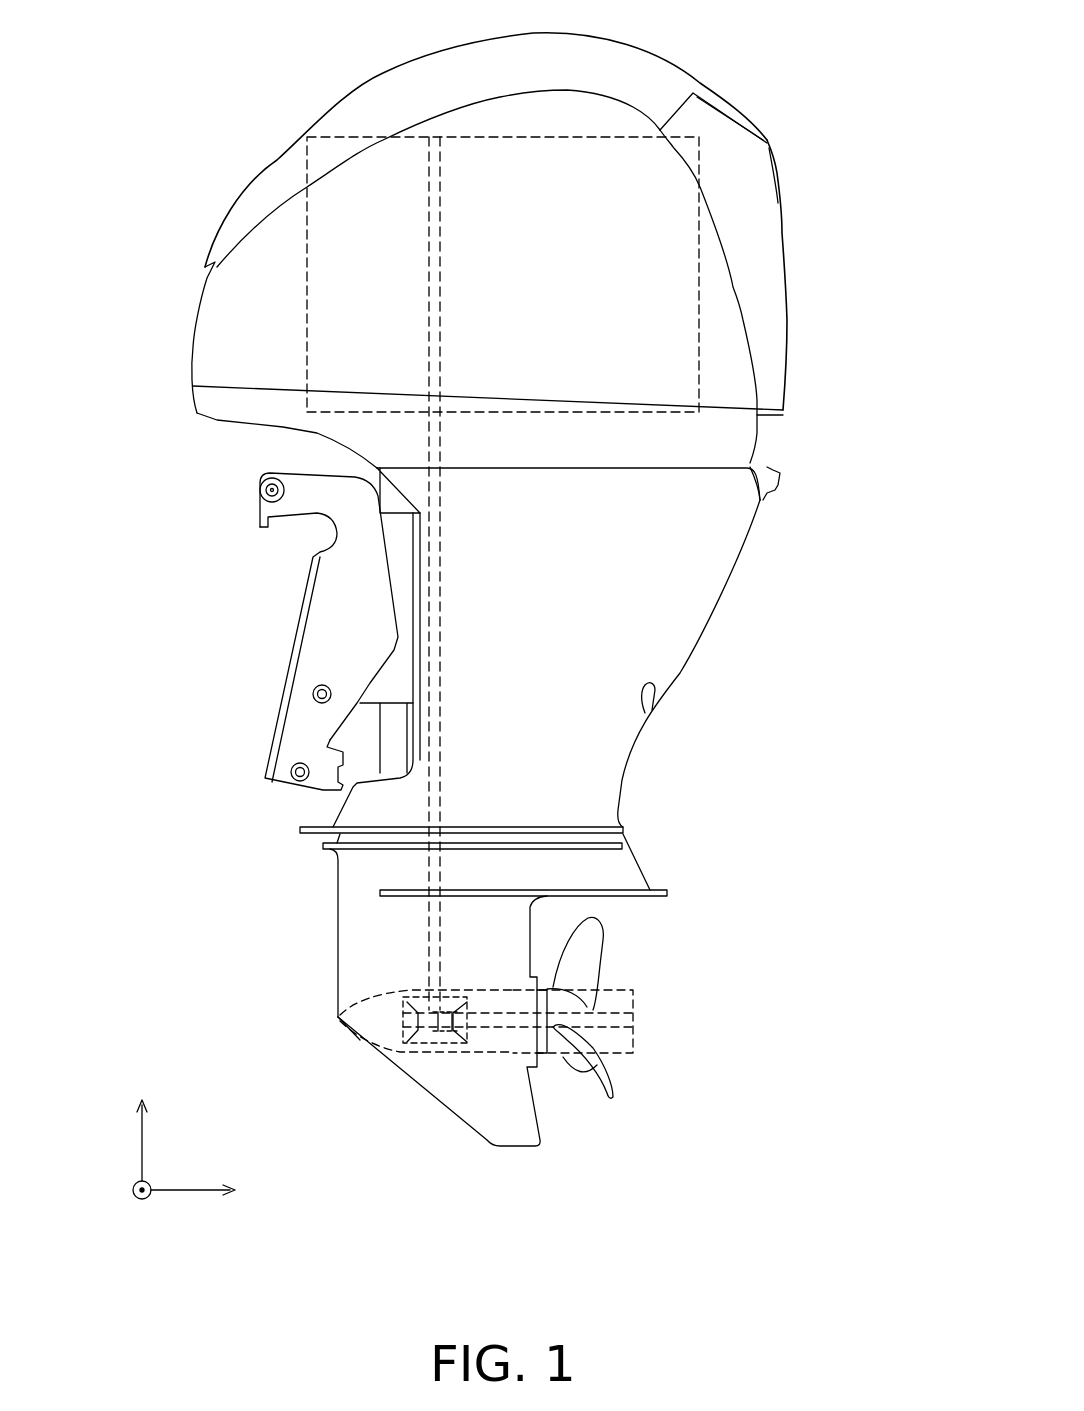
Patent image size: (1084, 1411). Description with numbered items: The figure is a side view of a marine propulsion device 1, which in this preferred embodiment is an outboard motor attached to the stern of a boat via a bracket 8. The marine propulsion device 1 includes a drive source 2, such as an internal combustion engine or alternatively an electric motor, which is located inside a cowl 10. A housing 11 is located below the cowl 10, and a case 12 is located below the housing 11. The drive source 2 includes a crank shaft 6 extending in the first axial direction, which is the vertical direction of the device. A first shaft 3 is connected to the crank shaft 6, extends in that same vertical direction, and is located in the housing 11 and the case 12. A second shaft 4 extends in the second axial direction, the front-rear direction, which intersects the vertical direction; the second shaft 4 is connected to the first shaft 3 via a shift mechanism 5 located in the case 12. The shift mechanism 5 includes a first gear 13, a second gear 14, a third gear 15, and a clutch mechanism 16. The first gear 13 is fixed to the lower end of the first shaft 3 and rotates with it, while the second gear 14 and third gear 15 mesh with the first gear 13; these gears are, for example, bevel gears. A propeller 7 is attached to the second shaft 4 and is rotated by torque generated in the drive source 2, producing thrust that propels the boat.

The marine propulsion device 1 is at (260, 95).
The drive source 2 is at (305, 255).
The first shaft 3 is at (440, 593).
The second shaft 4 is at (500, 1030).
The shift mechanism 5 is at (390, 1045).
The crank shaft 6 is at (425, 330).
The propeller 7 is at (573, 1052).
The bracket 8 is at (310, 583).
The cowl 10 is at (760, 245).
The housing 11 is at (695, 583).
The case 12 is at (355, 918).
The first gear 13 is at (423, 987).
The second gear 14 is at (385, 1020).
The third gear 15 is at (457, 1037).
The clutch mechanism 16 is at (445, 1010).